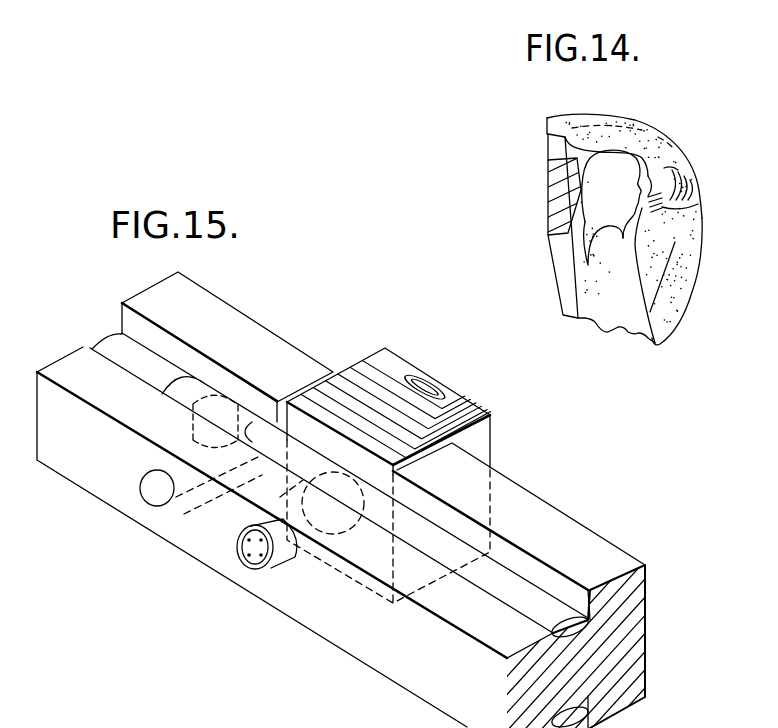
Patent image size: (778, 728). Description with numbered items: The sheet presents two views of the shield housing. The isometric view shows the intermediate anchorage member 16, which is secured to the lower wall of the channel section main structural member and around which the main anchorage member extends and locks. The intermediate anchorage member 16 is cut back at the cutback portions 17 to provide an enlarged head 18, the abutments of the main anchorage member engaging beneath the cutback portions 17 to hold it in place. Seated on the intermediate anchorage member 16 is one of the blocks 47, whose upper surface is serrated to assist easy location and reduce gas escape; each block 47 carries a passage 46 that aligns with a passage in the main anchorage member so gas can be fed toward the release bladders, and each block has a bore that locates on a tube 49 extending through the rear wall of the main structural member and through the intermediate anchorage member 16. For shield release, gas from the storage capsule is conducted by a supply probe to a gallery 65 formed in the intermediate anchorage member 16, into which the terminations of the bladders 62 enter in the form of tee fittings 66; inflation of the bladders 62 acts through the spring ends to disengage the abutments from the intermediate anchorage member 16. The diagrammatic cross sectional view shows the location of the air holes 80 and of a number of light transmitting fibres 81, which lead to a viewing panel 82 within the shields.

In FIG. 15, the intermediate anchorage member 16 is at (630, 620).
In FIG. 15, the cutback portions 17 is at (500, 549).
In FIG. 15, the enlarged head 18 is at (632, 678).
In FIG. 15, the passages 46 is at (458, 399).
In FIG. 15, the blocks 47 is at (396, 467).
In FIG. 15, the tube 49 is at (247, 565).
In FIG. 15, the bladders 62 is at (535, 605).
In FIG. 15, the gallery 65 is at (157, 498).
In FIG. 15, the tee fittings 66 is at (220, 402).
In FIG. 14, the air holes 80 is at (653, 212).
In FIG. 14, the light transmitting fibres 81 is at (693, 184).
In FIG. 14, the viewing panel 82 is at (650, 167).